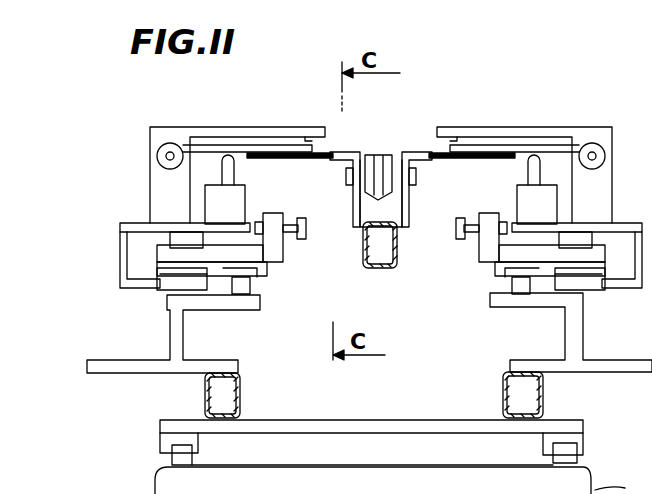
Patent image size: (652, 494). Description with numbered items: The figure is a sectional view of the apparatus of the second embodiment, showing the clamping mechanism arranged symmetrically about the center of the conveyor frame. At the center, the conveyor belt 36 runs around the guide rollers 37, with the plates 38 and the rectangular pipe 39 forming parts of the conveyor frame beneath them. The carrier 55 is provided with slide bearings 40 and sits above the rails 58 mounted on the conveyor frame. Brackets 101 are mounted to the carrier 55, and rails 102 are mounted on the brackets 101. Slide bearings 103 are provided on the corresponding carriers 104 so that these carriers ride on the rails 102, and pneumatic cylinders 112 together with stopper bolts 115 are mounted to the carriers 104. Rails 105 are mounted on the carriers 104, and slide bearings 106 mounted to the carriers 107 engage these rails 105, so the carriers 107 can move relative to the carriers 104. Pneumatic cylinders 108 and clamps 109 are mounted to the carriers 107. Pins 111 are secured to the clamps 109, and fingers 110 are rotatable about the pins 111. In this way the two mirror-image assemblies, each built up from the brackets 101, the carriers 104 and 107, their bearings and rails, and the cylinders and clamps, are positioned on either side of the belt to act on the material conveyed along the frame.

The conveyor belt 36 is at (345, 152).
The guide rollers 37 is at (370, 155).
The plates 38 is at (402, 222).
The rectangular pipe 39 is at (397, 250).
The slide bearings 40 is at (198, 447).
The carrier 55 is at (240, 396).
The rails 58 is at (580, 456).
The brackets 101 is at (186, 342).
The rails 102 is at (250, 285).
The slide bearings 103 is at (267, 273).
The carriers 104 is at (283, 252).
The rails 105 is at (265, 245).
The slide bearings 106 is at (185, 240).
The carriers 107 is at (118, 228).
The pneumatic cylinders 108 is at (248, 198).
The clamps 109 is at (150, 180).
The fingers 110 is at (258, 127).
The pins 111 is at (165, 148).
The pneumatic cylinders 112 is at (172, 292).
The stopper bolts 115 is at (302, 230).